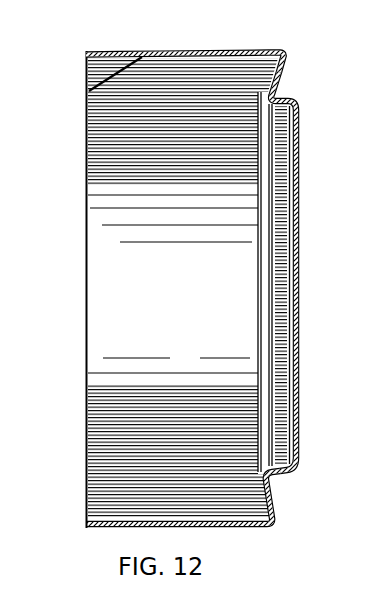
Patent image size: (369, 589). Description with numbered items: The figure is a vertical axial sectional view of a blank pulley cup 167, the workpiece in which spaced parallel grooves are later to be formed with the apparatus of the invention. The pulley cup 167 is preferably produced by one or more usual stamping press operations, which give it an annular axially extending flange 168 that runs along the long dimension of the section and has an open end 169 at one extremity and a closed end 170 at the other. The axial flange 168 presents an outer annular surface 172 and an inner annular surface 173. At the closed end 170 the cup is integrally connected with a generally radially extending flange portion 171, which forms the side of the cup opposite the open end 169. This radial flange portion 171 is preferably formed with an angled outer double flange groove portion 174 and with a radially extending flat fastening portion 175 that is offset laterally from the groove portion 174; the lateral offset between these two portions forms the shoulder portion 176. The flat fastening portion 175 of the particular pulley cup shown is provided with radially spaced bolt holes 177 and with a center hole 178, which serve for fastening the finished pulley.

The pulley cup 167 is at (80, 438).
The annular axially extending flange 168 is at (187, 52).
The open end 169 is at (87, 52).
The closed end 170 is at (286, 54).
The radially extending flange portion 171 is at (183, 288).
The outer annular surface 172 is at (143, 52).
The inner annular surface 173 is at (89, 91).
The angled outer double flange groove portion 174 is at (281, 78).
The radially extending flat fastening portion 175 is at (301, 135).
The shoulder portion 176 is at (277, 474).
The bolt holes 177 is at (293, 166).
The center hole 178 is at (295, 318).